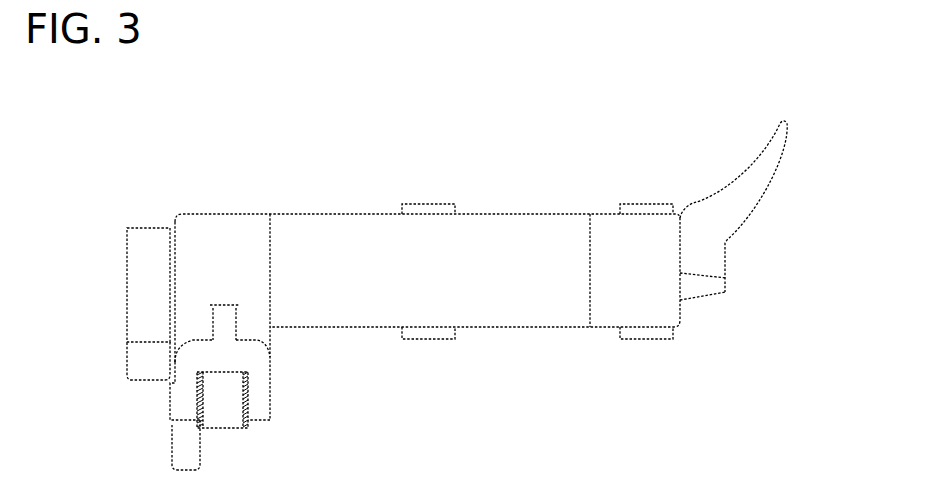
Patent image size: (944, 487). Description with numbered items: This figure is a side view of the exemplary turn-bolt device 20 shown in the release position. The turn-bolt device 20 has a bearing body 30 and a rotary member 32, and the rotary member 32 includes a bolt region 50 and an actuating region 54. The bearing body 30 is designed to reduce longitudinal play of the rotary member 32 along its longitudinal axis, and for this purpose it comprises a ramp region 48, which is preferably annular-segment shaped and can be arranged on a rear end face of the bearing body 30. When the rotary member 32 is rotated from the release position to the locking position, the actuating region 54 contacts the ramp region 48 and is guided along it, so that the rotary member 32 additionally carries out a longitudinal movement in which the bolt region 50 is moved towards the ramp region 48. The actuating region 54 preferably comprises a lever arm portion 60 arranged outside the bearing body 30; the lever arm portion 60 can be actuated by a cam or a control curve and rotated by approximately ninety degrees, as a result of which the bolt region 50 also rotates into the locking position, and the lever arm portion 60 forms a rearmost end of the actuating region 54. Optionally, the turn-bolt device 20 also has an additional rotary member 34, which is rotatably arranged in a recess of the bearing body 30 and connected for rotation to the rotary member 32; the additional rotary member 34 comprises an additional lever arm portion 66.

The turn-bolt device 20 is at (457, 76).
The bearing body 30 is at (340, 223).
The rotary member 32 is at (756, 293).
The additional rotary member 34 is at (243, 403).
The additional lever arm portion 66 is at (222, 400).
The ramp region 48 is at (170, 297).
The bolt region 50 is at (780, 163).
The actuating region 54 is at (123, 204).
The lever arm portion 60 is at (130, 282).